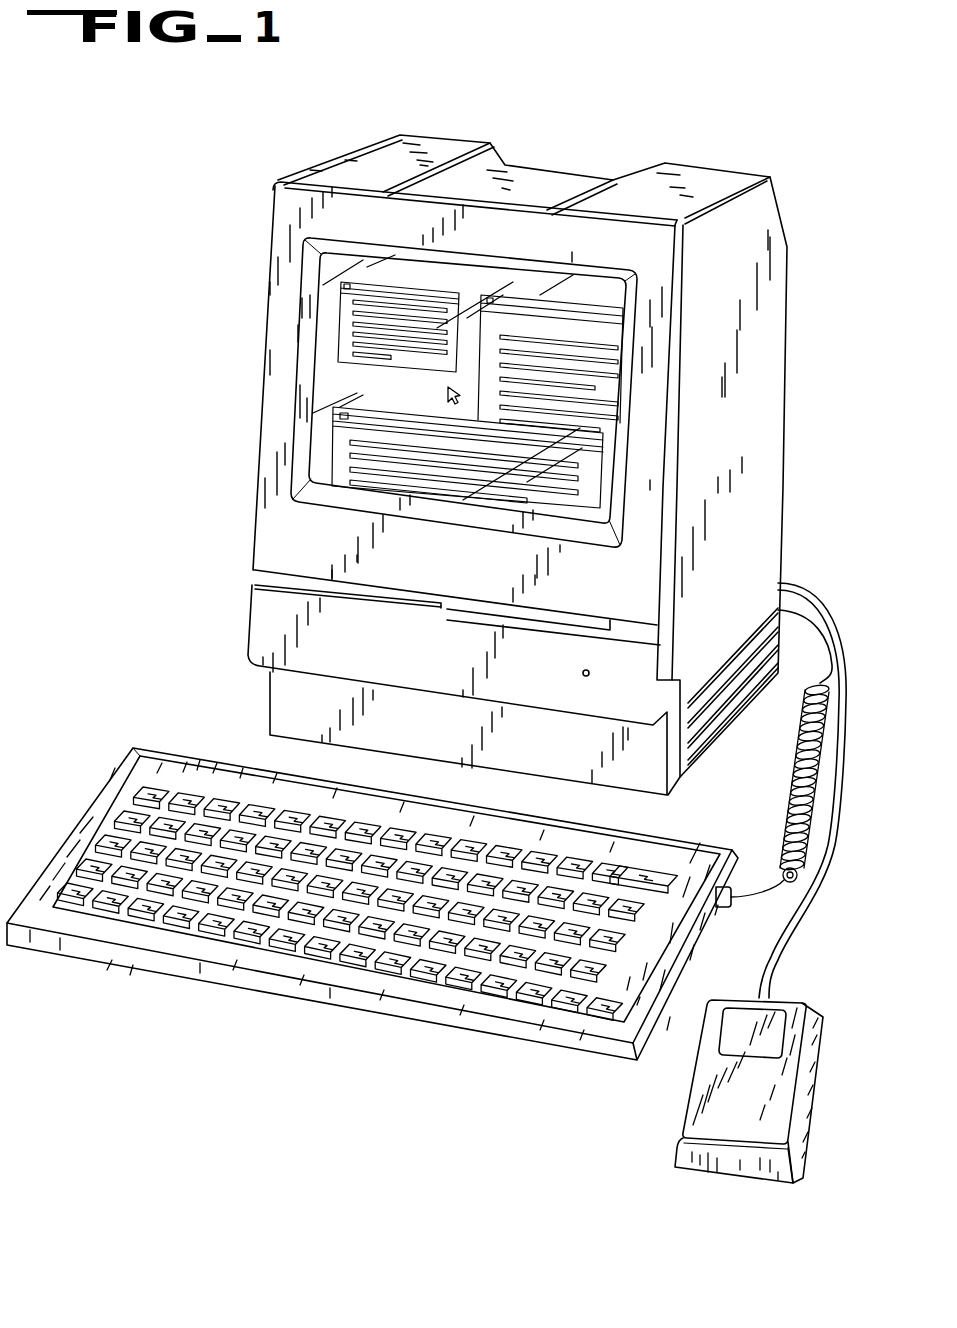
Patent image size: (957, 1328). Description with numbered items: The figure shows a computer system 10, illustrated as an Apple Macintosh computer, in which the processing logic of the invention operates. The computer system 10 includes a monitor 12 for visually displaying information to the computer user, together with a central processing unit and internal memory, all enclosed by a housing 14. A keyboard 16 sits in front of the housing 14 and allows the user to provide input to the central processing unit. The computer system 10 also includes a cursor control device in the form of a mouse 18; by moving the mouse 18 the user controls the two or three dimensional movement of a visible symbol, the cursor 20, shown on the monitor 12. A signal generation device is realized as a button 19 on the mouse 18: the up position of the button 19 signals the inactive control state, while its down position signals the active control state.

The computer system 10 is at (163, 168).
The monitor 12 is at (530, 430).
The housing 14 is at (314, 535).
The keyboard 16 is at (343, 455).
The mouse 18 is at (713, 1080).
The button 19 is at (747, 1023).
The cursor 20 is at (441, 394).